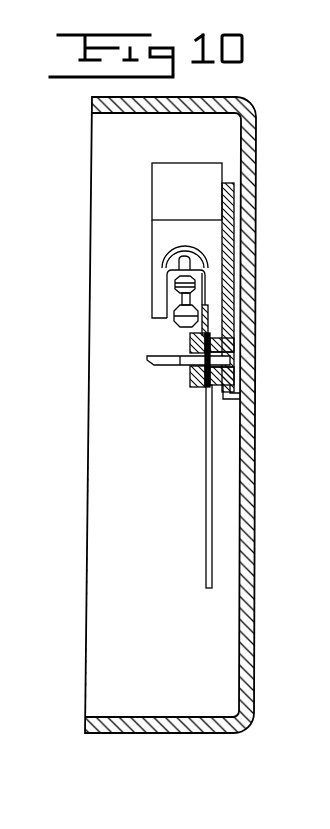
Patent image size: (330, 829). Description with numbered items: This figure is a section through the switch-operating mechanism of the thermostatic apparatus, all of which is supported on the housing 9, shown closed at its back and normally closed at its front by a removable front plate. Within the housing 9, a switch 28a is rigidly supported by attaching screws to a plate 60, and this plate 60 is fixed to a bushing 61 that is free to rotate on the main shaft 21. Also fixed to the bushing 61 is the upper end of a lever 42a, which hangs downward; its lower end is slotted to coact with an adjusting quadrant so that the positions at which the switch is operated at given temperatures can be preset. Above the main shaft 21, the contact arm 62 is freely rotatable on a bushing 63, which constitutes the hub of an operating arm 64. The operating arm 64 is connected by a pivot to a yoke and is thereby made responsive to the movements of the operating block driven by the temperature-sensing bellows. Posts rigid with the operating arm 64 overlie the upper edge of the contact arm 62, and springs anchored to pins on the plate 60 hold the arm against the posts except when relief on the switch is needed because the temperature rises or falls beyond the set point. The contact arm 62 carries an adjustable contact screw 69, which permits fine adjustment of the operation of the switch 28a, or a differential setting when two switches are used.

The housing 9 is at (258, 153).
The switch 28a is at (187, 240).
The plate 60 is at (237, 229).
The contact arm 62 is at (206, 290).
The adjustable contact screw 69 is at (167, 298).
The bushing 63 is at (190, 341).
The operating arm 64 is at (181, 376).
The bushing 61 is at (236, 347).
The main shaft 21 is at (150, 357).
The lever 42a is at (205, 535).